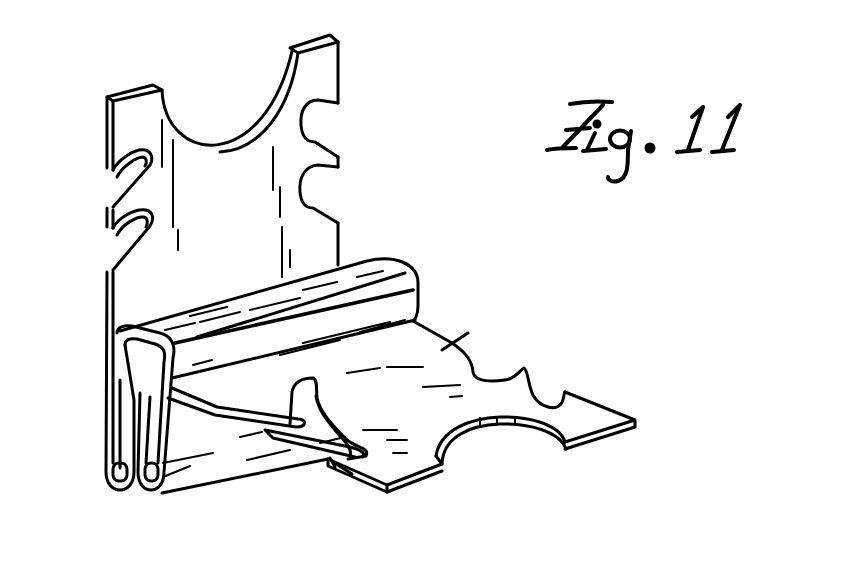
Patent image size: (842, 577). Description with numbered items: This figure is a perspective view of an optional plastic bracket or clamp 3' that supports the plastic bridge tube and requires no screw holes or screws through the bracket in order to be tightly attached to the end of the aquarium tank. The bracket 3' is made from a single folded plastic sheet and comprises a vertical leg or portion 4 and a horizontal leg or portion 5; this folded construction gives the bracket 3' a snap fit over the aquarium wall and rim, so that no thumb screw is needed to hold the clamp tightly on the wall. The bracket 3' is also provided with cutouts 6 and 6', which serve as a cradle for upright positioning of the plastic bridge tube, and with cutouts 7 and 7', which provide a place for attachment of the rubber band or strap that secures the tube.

The bracket or clamp 3' is at (317, 352).
The vertical leg or portion 4 is at (330, 85).
The horizontal leg or portion 5 is at (458, 346).
The cutout 6 is at (230, 85).
The cutout 6' is at (501, 467).
The cutout 7 is at (229, 184).
The cutout 7' is at (426, 384).